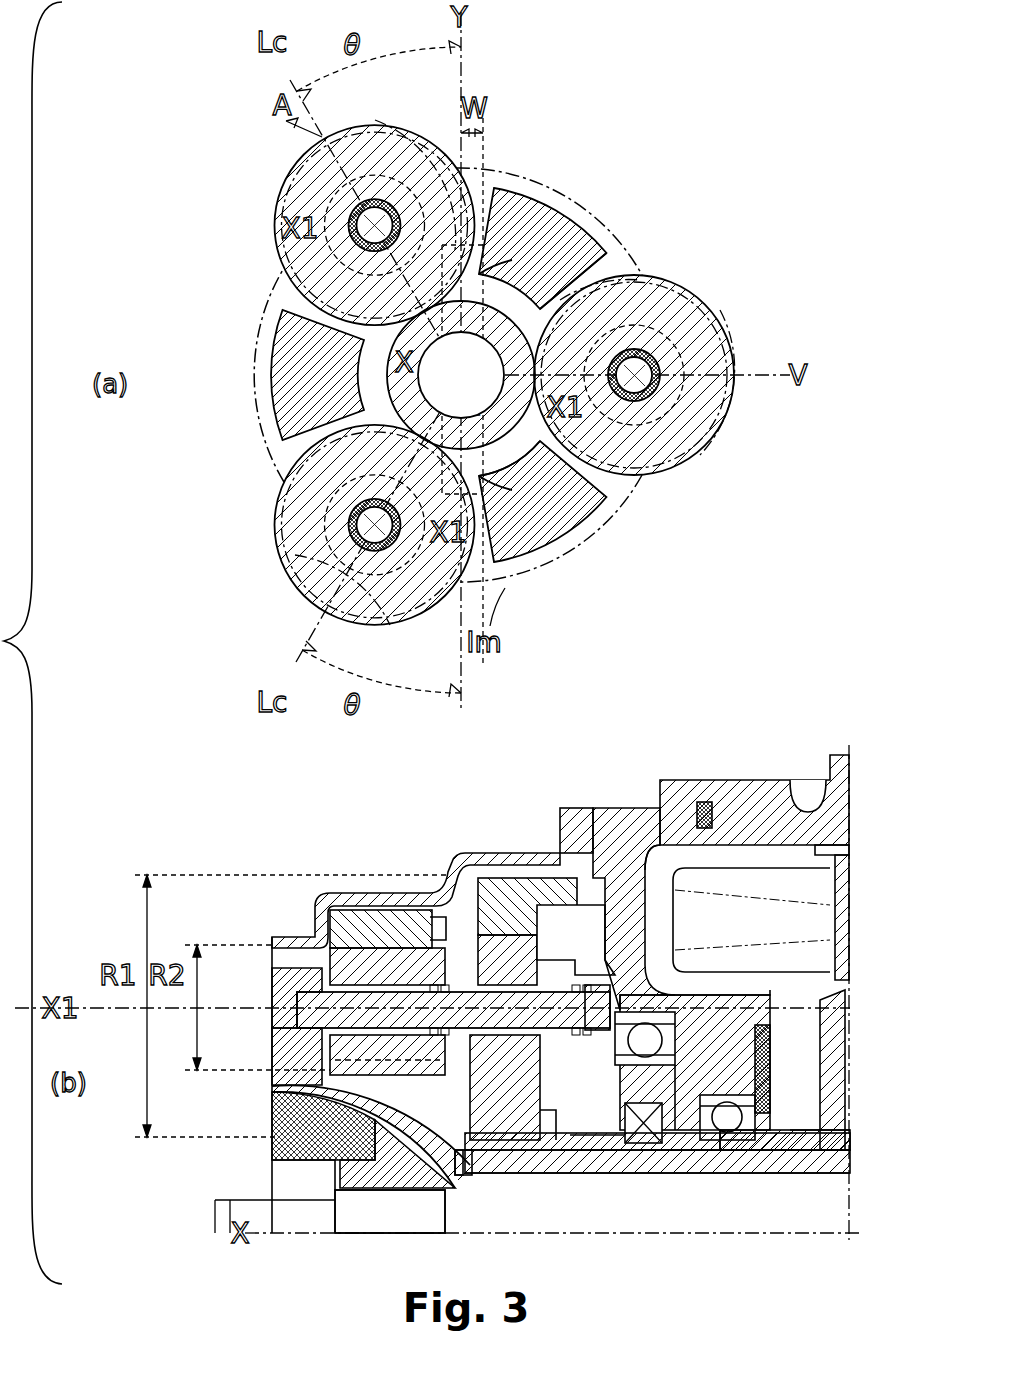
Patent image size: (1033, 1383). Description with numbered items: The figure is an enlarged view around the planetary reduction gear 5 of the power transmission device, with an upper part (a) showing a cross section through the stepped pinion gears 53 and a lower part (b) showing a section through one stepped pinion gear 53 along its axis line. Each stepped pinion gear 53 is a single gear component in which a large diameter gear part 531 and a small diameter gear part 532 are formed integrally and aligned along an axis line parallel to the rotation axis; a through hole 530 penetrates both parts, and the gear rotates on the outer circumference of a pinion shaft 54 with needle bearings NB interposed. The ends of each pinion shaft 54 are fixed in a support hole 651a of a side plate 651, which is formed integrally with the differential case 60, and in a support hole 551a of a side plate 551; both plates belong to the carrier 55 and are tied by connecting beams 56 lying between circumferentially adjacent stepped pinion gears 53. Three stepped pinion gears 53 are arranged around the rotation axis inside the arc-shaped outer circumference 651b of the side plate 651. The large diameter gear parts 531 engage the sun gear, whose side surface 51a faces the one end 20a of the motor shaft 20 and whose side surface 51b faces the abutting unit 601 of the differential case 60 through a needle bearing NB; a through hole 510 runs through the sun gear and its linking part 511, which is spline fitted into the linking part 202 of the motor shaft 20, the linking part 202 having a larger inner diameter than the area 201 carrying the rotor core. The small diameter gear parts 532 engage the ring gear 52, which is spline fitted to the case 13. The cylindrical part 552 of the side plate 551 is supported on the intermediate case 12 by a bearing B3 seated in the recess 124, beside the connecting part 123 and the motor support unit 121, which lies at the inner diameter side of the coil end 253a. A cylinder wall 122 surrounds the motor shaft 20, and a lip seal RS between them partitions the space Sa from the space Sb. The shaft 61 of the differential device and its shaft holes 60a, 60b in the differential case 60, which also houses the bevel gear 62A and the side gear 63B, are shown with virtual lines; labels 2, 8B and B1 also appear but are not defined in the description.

The motor housing 2 is at (818, 831).
The planetary reduction gear 5 is at (336, 876).
The bolt 8B is at (512, 446).
The intermediate case 12 is at (609, 798).
The case 13 is at (561, 797).
The motor shaft 20 is at (861, 1174).
The one end 20a is at (618, 1173).
The side surface 51a is at (570, 1150).
The side surface 51b is at (470, 1175).
The ring gear 52 is at (378, 910).
The stepped pinion gear 53 is at (165, 173).
The pinion shaft 54 is at (364, 244).
The carrier 55 is at (712, 852).
The connecting beam 56 is at (552, 204).
The differential case 60 is at (330, 1096).
The shaft hole 60a is at (482, 250).
The shaft hole 60b is at (484, 478).
The shaft 61 is at (526, 268).
The bevel gear 62A is at (272, 1162).
The side gear 63B is at (330, 1211).
The motor support unit 121 is at (748, 995).
The cylinder wall 122 is at (670, 1173).
The connecting part 123 is at (690, 958).
The recess 124 is at (665, 1048).
The area 201 is at (815, 1173).
The linking part 202 is at (746, 1173).
The coil end 253a is at (712, 815).
The through hole 510 is at (508, 1065).
The linking part 511 is at (690, 1175).
The through hole 530 is at (500, 985).
The large diameter gear part 531 is at (278, 212).
The small diameter gear part 532 is at (275, 233).
The side plate 551 is at (580, 960).
The support hole 551a is at (590, 1008).
The cylindrical part 552 is at (680, 1092).
The abutting unit 601 is at (458, 1150).
The side plate 651 is at (300, 968).
The support hole 651a is at (393, 152).
The outer circumference 651b is at (640, 252).
The first bearing B1 is at (740, 1100).
The bearing B3 is at (625, 1042).
The needle bearing NB is at (396, 1117).
The lip seal RS is at (582, 1149).
The space Sa is at (805, 1124).
The space Sb is at (610, 1112).